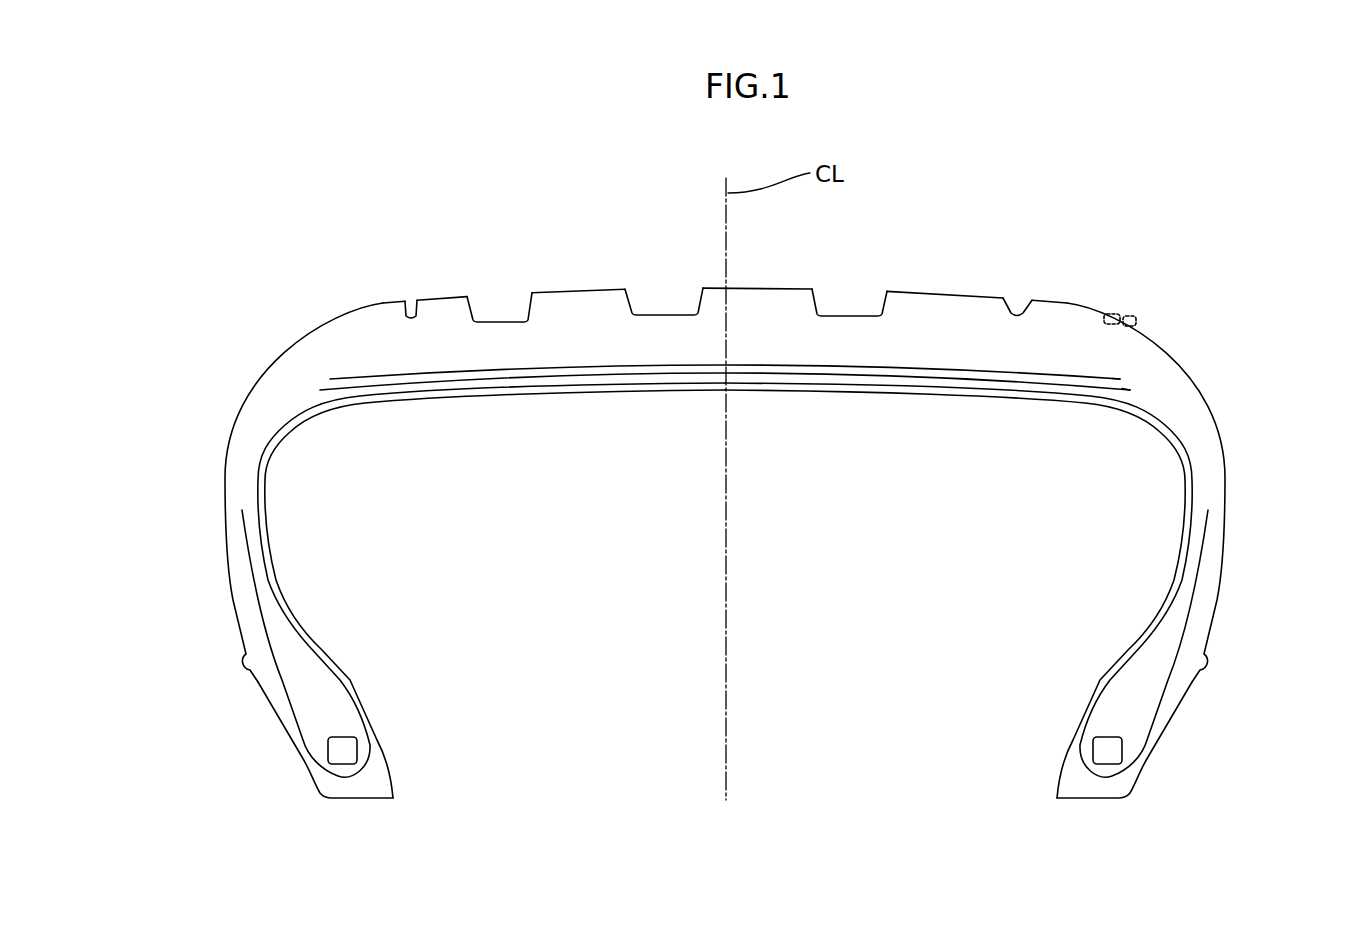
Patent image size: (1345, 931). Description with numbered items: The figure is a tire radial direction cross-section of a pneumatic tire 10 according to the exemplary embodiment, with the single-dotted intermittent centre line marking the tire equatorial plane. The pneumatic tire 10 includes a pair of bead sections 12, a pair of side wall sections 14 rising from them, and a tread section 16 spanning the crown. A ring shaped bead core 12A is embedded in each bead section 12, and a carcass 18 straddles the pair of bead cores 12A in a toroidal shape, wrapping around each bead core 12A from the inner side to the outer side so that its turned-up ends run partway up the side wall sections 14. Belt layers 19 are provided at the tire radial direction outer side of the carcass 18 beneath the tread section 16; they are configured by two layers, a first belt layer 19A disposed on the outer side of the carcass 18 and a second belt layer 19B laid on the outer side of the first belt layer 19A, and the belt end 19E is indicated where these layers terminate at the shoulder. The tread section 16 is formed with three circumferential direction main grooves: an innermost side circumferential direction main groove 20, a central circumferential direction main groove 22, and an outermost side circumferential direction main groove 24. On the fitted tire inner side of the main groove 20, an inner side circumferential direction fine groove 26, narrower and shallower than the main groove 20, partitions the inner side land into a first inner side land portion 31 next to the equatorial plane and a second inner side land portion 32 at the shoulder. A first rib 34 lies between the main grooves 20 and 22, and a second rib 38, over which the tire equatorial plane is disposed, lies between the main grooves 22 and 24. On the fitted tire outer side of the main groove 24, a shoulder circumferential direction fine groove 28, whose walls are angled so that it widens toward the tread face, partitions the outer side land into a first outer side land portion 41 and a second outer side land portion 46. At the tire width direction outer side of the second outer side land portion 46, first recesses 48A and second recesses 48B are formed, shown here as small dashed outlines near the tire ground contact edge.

The pneumatic tire 10 is at (1263, 201).
The bead section 12 is at (386, 743).
The bead core 12A is at (327, 750).
The side wall section 14 is at (225, 548).
The tread section 16 is at (1097, 306).
The carcass 18 is at (257, 478).
The belt layers 19 is at (318, 243).
The first belt layer 19A is at (320, 390).
The second belt layer 19B is at (373, 373).
The belt end 19E is at (1133, 385).
The innermost side circumferential direction main groove 20 is at (527, 300).
The central circumferential direction main groove 22 is at (700, 302).
The outermost side circumferential direction main groove 24 is at (883, 304).
The inner side circumferential direction fine groove 26 is at (410, 305).
The shoulder circumferential direction fine groove 28 is at (1020, 307).
The first inner side land portion 31 is at (440, 300).
The second inner side land portion 32 is at (381, 303).
The first rib 34 is at (566, 294).
The second rib 38 is at (766, 291).
The first outer side land portion 41 is at (940, 296).
The second outer side land portion 46 is at (1052, 300).
The first recess 48A is at (1110, 314).
The second recess 48B is at (1134, 320).